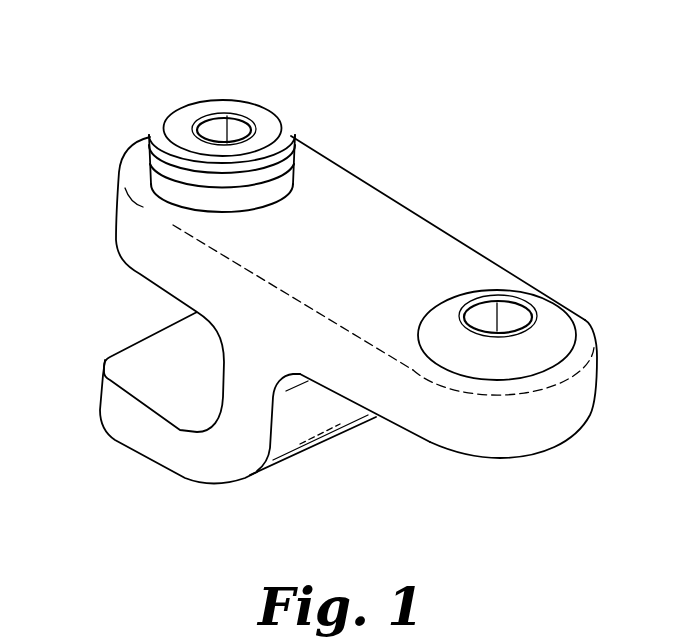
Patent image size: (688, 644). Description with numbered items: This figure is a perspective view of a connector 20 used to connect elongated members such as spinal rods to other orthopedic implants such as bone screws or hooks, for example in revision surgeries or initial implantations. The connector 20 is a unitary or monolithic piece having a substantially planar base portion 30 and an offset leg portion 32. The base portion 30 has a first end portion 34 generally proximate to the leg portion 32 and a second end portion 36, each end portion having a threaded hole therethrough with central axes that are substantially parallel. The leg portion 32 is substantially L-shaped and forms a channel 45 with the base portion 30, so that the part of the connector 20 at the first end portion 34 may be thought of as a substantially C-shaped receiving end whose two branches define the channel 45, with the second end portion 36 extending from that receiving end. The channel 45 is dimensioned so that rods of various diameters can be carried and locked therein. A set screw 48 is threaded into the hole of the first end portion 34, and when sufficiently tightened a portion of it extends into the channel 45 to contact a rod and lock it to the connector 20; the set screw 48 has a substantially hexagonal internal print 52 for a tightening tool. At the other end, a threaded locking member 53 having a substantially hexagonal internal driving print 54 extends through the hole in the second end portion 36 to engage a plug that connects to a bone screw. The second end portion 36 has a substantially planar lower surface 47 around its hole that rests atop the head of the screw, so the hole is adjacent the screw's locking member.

The connector 20 is at (447, 123).
The base portion 30 is at (397, 263).
The leg portion 32 is at (227, 453).
The first end portion 34 is at (309, 148).
The second end portion 36 is at (420, 417).
The channel 45 is at (155, 342).
The lower surface 47 is at (480, 460).
The set screw 48 is at (180, 128).
The internal print 52 is at (237, 120).
The threaded locking member 53 is at (557, 327).
The internal driving print 54 is at (500, 302).